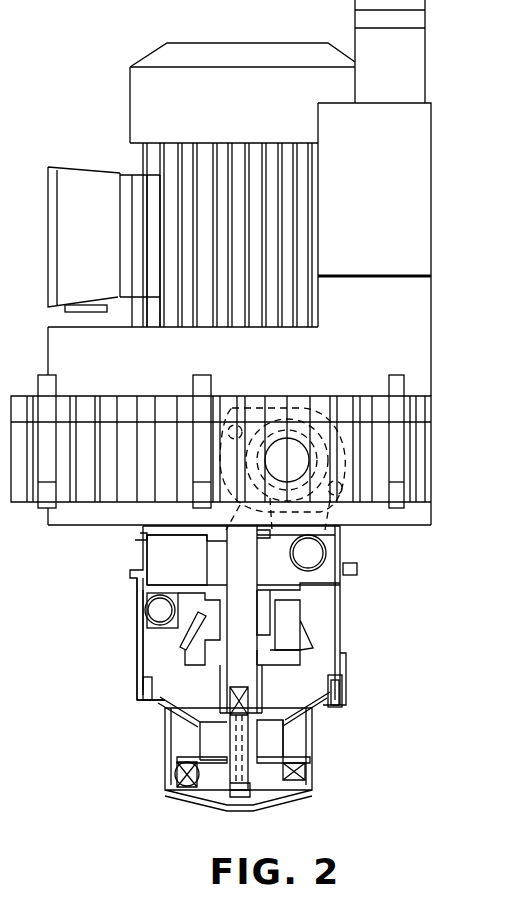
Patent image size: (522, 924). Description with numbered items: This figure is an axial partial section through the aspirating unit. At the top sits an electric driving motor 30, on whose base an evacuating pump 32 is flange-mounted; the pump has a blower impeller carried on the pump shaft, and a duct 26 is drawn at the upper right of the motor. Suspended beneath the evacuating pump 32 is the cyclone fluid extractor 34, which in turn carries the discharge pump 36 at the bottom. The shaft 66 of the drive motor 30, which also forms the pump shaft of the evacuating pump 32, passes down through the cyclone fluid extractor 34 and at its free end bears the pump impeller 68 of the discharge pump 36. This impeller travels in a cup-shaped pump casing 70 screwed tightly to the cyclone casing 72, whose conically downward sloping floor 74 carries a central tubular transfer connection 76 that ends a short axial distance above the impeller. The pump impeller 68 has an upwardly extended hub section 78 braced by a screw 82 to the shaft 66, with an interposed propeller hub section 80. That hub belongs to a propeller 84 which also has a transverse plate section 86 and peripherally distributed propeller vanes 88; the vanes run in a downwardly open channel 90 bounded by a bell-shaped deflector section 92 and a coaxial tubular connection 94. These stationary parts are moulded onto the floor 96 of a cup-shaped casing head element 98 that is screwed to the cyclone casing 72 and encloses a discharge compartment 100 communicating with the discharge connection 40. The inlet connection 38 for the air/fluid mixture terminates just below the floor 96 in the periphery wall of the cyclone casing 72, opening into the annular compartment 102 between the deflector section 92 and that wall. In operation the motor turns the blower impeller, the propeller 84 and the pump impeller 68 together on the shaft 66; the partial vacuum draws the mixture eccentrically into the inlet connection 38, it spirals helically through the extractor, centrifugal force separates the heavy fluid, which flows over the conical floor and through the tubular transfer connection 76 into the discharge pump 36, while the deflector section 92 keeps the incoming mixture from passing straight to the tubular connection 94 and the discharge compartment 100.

The exhaust duct 26 is at (408, 62).
The electric driving motor 30 is at (252, 232).
The evacuating pump 32 is at (336, 447).
The cyclone fluid extractor 34 is at (123, 652).
The discharge pump 36 is at (143, 750).
The inlet connection 38 is at (160, 600).
The discharge connection 40 is at (280, 548).
The shaft 66 is at (238, 590).
The pump impeller 68 is at (265, 773).
The cup-shaped pump casing 70 is at (313, 728).
The cyclone casing 72 is at (340, 653).
The conically downward sloping floor 74 is at (323, 700).
The tubular transfer connection 76 is at (285, 742).
The hub section 78 is at (227, 743).
The propeller hub section 80 is at (180, 710).
The screw 82 is at (243, 783).
The propeller 84 is at (195, 645).
The transverse plate section 86 is at (148, 693).
The propeller vanes 88 is at (190, 618).
The channel 90 is at (180, 602).
The bell-shaped deflector section 92 is at (305, 630).
The tubular connection 94 is at (275, 610).
The floor 96 is at (317, 573).
The casing head element 98 is at (143, 542).
The discharge compartment 100 is at (172, 566).
The annular compartment 102 is at (327, 638).